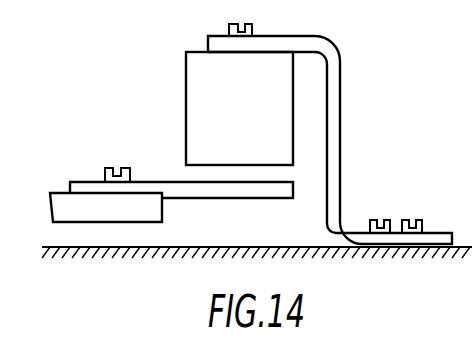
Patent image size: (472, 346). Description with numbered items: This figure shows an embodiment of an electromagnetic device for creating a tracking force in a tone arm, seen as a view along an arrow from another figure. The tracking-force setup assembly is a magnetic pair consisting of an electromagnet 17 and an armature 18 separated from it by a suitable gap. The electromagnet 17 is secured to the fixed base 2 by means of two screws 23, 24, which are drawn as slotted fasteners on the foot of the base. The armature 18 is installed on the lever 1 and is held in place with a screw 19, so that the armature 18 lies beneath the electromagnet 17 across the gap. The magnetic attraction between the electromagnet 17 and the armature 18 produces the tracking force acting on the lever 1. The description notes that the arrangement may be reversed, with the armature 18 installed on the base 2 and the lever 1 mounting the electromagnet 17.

The lever 1 is at (60, 210).
The fixed base 2 is at (334, 249).
The electromagnet 17 is at (203, 97).
The armature 18 is at (90, 189).
The screw 19 is at (129, 177).
The screw 23 is at (374, 221).
The screw 24 is at (420, 226).